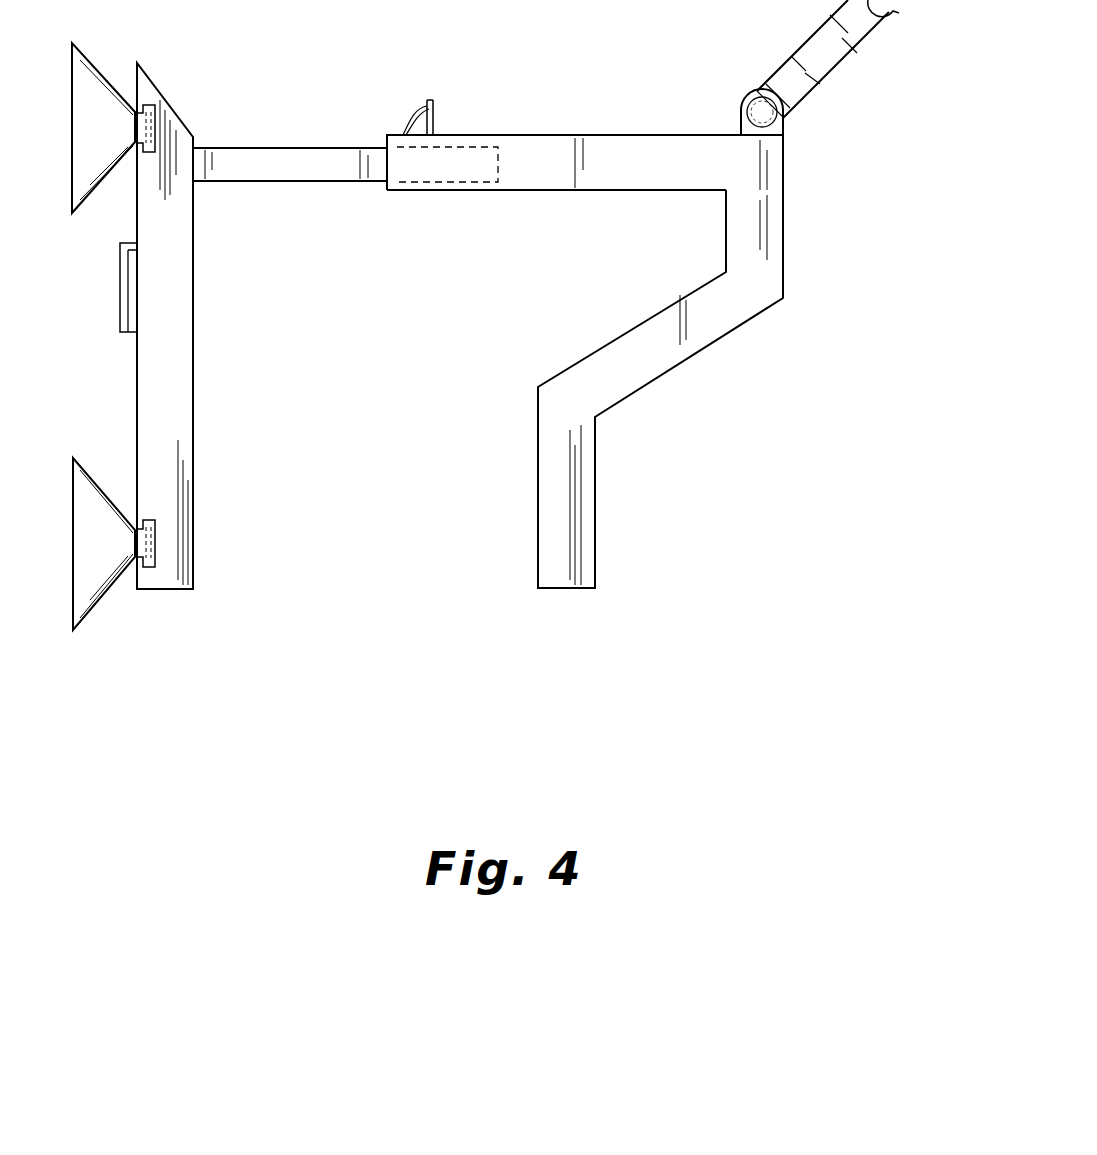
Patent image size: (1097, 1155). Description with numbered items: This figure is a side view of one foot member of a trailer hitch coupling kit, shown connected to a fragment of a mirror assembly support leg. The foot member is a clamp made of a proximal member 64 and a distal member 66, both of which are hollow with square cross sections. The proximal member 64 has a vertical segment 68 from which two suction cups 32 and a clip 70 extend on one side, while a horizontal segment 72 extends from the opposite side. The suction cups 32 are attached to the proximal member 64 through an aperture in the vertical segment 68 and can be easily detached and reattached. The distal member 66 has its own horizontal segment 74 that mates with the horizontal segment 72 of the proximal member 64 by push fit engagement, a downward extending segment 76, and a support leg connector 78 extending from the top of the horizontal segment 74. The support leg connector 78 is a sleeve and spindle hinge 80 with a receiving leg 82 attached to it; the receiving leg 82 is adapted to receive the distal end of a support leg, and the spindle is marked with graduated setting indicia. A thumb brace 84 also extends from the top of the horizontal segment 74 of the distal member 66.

The suction cups 32 is at (98, 600).
The proximal member 64 is at (190, 231).
The distal member 66 is at (726, 213).
The vertical segment 68 is at (190, 393).
The clip 70 is at (120, 264).
The horizontal segment 72 is at (290, 148).
The horizontal segment 74 is at (594, 135).
The downward extending segment 76 is at (725, 328).
The support leg connector 78 is at (830, 88).
The sleeve and spindle hinge 80 is at (757, 107).
The receiving leg 82 is at (768, 78).
The thumb brace 84 is at (433, 100).